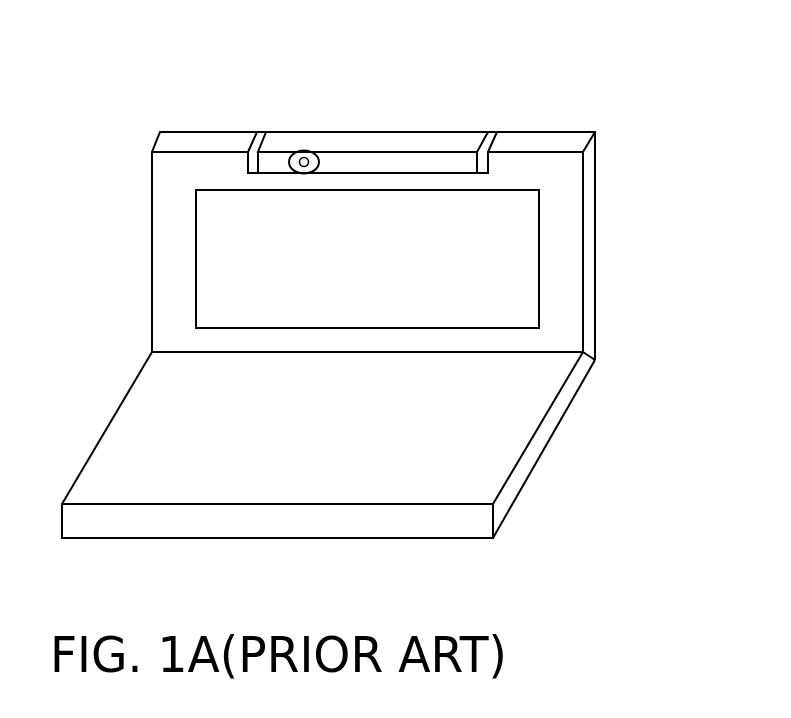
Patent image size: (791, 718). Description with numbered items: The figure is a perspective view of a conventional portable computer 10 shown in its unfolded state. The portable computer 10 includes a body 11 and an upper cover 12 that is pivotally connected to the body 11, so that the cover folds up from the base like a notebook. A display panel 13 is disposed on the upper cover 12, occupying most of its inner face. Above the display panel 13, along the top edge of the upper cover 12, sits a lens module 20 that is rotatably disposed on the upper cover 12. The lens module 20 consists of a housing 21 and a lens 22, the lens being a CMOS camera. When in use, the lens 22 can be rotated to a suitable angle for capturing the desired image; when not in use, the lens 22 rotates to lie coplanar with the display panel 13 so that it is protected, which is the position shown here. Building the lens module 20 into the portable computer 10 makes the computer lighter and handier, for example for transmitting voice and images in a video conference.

The portable computer 10 is at (673, 30).
The body 11 is at (548, 428).
The upper cover 12 is at (590, 228).
The display panel 13 is at (522, 277).
The lens module 20 is at (455, 59).
The housing 21 is at (438, 140).
The lens 22 is at (305, 160).